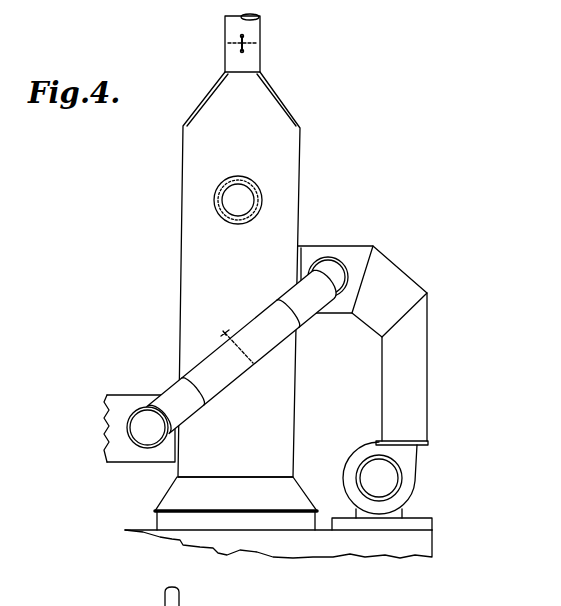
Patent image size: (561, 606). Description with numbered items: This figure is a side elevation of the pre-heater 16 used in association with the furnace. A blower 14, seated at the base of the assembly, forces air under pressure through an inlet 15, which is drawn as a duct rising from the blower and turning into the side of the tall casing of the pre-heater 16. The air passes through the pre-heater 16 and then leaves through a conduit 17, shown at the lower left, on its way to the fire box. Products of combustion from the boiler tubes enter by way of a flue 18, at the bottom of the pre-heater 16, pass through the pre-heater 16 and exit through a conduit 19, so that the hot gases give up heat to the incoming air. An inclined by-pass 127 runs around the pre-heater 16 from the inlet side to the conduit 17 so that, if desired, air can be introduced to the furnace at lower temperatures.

The blower 14 is at (375, 470).
The inlet 15 is at (418, 349).
The pre-heater 16 is at (172, 218).
The conduit 17 is at (118, 400).
The flue 18 is at (183, 497).
The conduit 19 is at (262, 196).
The by-pass 127 is at (253, 321).